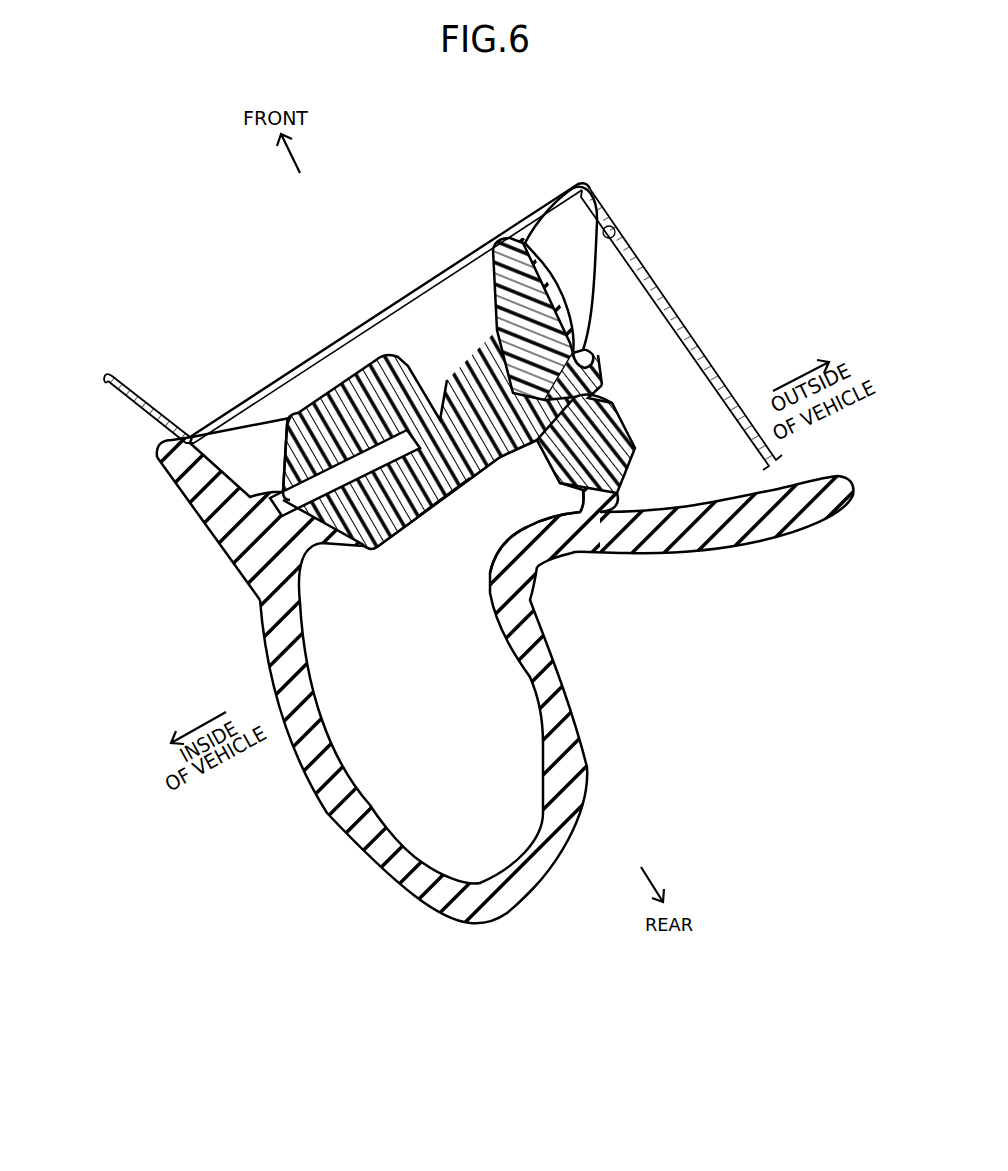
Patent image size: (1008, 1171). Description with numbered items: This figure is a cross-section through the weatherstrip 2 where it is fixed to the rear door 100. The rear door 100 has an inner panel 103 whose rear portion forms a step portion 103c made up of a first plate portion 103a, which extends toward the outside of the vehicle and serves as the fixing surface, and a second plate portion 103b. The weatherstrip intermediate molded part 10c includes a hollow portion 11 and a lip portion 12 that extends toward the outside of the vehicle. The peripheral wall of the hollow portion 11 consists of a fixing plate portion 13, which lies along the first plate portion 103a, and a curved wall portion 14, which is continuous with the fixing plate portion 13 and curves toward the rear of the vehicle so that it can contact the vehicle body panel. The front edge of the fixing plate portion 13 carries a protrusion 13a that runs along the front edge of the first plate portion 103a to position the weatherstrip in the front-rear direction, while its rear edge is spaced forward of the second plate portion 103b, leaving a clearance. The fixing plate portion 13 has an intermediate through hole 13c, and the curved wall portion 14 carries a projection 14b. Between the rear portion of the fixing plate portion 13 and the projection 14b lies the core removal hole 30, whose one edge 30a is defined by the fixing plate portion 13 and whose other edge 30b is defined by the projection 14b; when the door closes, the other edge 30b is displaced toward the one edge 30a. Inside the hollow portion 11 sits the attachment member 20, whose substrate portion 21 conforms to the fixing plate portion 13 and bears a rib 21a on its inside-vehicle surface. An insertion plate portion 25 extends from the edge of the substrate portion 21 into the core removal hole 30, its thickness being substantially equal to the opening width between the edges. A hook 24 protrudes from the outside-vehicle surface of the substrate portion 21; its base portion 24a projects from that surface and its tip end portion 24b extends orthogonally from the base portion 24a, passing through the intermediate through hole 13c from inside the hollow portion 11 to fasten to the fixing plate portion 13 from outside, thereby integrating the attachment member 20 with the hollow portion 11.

The weatherstrip 2 is at (113, 565).
The weatherstrip intermediate molded part 10c is at (200, 532).
The hollow portion 11 is at (331, 840).
The lip portion 12 is at (753, 547).
The fixing plate portion 13 is at (297, 487).
The protrusion 13a is at (158, 444).
The intermediate through hole 13c is at (377, 362).
The curved wall portion 14 is at (585, 780).
The projection 14b is at (610, 420).
The attachment member 20 is at (342, 545).
The substrate portion 21 is at (520, 447).
The rib 21a is at (445, 520).
The hook 24 is at (320, 400).
The base portion 24a is at (383, 523).
The tip end portion 24b is at (293, 473).
The insertion plate portion 25 is at (592, 360).
The core removal hole 30 is at (510, 392).
The one edge 30a is at (587, 350).
The other edge 30b is at (597, 395).
The rear door 100 is at (109, 393).
The inner panel 103 is at (692, 319).
The first plate portion 103a is at (600, 203).
The second plate portion 103b is at (613, 218).
The step portion 103c is at (692, 304).